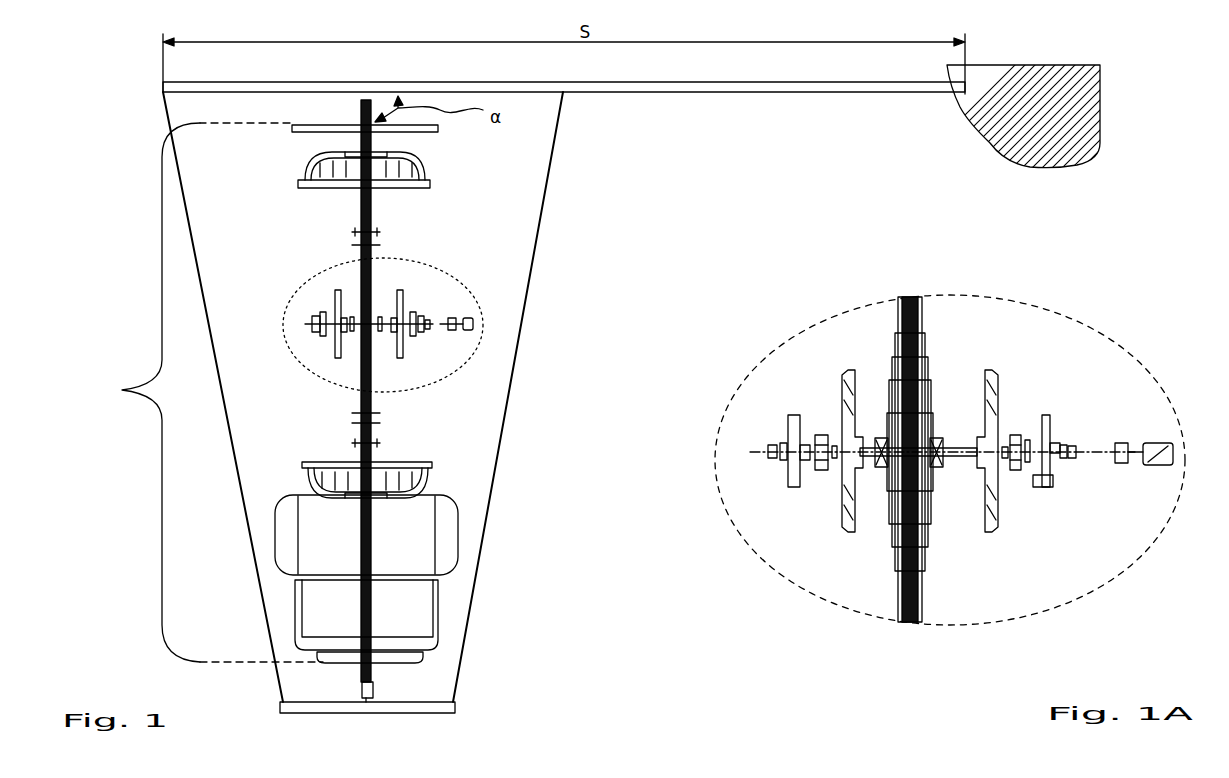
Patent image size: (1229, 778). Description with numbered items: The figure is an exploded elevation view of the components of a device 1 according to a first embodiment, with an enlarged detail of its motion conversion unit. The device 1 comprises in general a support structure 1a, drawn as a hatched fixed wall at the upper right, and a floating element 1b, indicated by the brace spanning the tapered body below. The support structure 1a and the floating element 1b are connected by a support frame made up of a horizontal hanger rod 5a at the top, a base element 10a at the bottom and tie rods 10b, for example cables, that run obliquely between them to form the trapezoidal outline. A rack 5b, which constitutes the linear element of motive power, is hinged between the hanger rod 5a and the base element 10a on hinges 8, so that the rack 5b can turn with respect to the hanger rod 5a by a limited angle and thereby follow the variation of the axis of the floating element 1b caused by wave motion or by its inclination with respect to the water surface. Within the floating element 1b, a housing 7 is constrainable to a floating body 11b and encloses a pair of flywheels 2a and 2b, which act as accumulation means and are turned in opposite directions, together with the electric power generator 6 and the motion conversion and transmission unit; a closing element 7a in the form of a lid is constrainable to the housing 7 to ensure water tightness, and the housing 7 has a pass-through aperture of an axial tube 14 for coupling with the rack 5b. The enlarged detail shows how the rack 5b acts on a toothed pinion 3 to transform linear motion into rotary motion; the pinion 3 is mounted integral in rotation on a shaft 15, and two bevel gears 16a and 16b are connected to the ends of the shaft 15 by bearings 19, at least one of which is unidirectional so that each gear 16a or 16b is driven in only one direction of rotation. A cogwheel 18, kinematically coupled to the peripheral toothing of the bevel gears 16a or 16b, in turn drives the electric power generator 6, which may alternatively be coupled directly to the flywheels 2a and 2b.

In FIG. 1, the device 1 is at (590, 154).
In FIG. 1, the support structure 1a is at (987, 127).
In FIG. 1, the floating element 1b is at (200, 392).
In FIG. 1, the flywheel 2a is at (427, 170).
In FIG. 1, the flywheel 2b is at (408, 463).
In FIG. 1A, the toothed pinion 3 is at (922, 477).
In FIG. 1, the hanger rod 5a is at (723, 88).
In FIG. 1, the rack 5b is at (363, 263).
In FIG. 1A, the rack 5b is at (920, 322).
In FIG. 1A, the electric power generator 6 is at (1163, 448).
In FIG. 1, the housing 7 is at (435, 600).
In FIG. 1, the closing element 7a is at (300, 130).
In FIG. 1, the hinges 8 is at (365, 100).
In FIG. 1, the base element 10a is at (447, 710).
In FIG. 1, the tie rods 10b is at (213, 328).
In FIG. 1, the floating body 11b is at (448, 533).
In FIG. 1A, the axial tube 14 is at (920, 563).
In FIG. 1A, the shaft 15 is at (958, 450).
In FIG. 1A, the bevel gear 16a is at (993, 392).
In FIG. 1A, the bevel gear 16b is at (843, 387).
In FIG. 1A, the cogwheel 18 is at (1120, 463).
In FIG. 1A, the bearings 19 is at (822, 473).